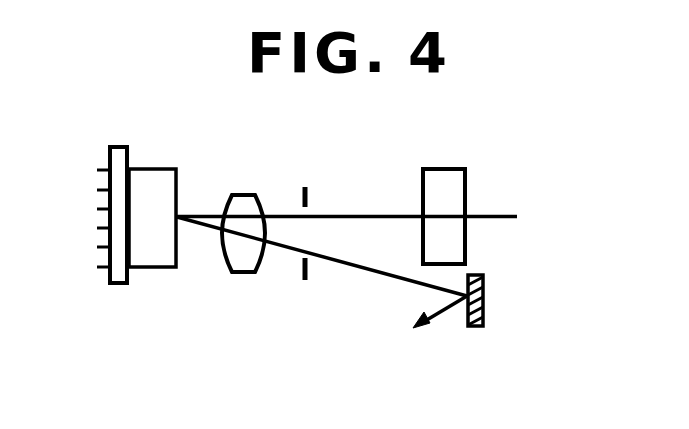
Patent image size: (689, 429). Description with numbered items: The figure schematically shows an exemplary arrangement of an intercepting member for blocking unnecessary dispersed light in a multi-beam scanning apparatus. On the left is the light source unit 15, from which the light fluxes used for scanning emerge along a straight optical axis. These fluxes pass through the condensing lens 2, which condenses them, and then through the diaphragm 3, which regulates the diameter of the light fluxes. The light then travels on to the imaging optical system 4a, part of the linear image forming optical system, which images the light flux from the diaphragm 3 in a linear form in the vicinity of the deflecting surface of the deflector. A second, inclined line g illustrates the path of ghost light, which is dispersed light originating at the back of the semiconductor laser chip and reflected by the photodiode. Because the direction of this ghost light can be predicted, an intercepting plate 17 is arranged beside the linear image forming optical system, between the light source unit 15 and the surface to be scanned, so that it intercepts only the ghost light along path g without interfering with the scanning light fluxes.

The light source unit 15 is at (156, 268).
The condensing lens 2 is at (243, 273).
The diaphragm 3 is at (302, 279).
The ghost light path g is at (348, 264).
The imaging optical system 4a is at (465, 183).
The intercepting plate 17 is at (484, 308).